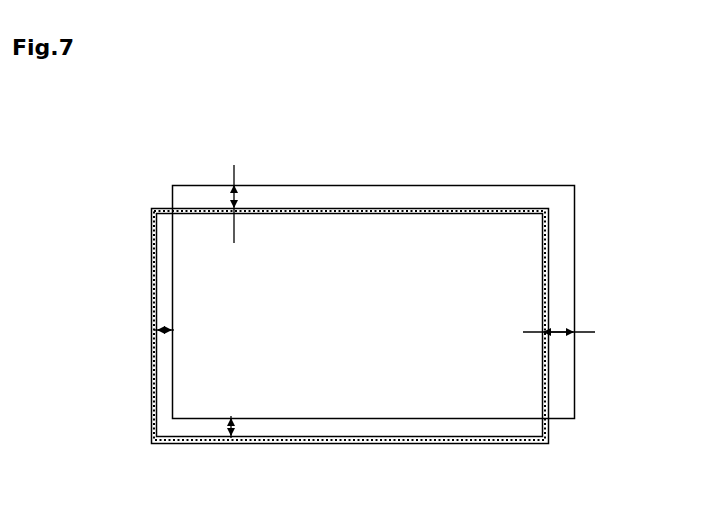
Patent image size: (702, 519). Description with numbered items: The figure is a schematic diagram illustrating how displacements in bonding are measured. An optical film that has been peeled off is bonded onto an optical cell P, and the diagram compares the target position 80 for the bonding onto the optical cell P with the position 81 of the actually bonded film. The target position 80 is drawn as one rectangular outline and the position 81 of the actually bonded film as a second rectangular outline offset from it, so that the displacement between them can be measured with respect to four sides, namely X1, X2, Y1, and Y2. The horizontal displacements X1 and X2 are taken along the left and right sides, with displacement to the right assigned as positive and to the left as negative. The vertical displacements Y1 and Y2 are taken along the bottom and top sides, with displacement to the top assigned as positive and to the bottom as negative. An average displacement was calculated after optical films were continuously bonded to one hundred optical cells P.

The target position 80 is at (152, 246).
The position of the actually bonded film 81 is at (172, 185).
The optical cell P is at (151, 220).
The displacement X1 is at (168, 328).
The displacement X2 is at (558, 332).
The displacement Y1 is at (234, 428).
The displacement Y2 is at (238, 197).